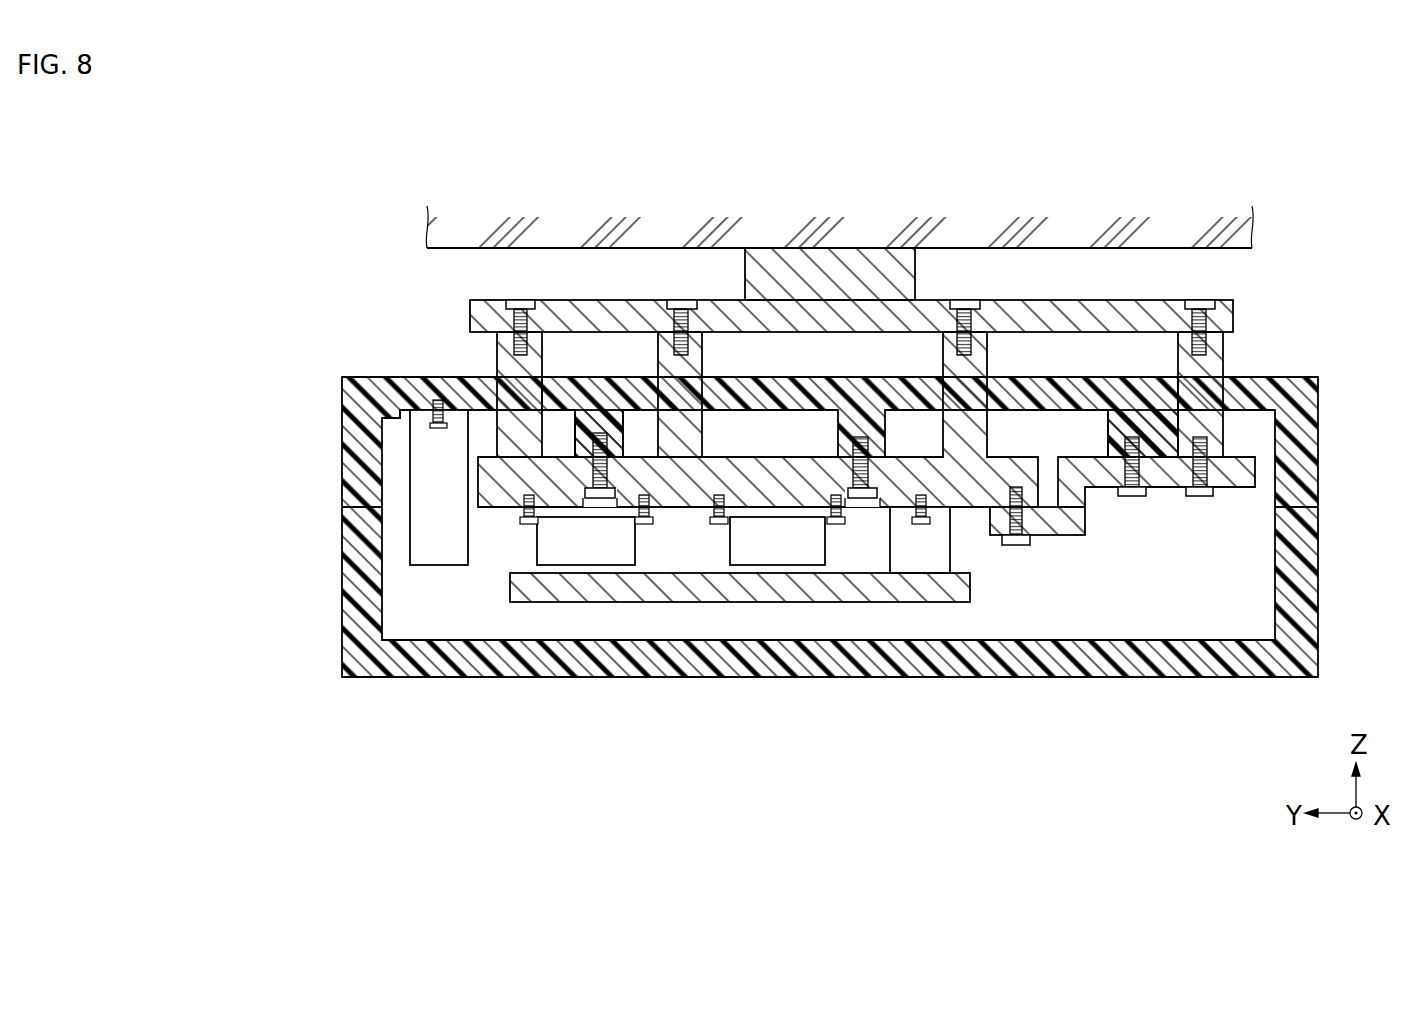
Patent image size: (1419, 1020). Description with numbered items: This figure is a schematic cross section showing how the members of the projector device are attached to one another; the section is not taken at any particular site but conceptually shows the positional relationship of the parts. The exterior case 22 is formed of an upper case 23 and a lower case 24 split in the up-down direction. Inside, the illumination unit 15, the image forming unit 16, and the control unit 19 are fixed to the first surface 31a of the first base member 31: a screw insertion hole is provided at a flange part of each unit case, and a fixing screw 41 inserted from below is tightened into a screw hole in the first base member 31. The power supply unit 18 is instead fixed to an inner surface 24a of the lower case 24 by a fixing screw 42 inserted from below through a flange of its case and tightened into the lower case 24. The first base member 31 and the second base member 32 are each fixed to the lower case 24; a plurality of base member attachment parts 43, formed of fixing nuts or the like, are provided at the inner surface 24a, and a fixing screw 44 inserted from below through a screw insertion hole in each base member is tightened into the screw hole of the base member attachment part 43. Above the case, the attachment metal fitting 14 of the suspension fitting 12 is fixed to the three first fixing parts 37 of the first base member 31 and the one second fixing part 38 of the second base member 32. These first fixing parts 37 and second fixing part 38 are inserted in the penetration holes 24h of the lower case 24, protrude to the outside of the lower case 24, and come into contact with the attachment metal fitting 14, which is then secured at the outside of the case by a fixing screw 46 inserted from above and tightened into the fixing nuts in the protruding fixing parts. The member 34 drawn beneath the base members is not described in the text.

The suspension fitting 12 is at (838, 280).
The attachment metal fitting 14 is at (1233, 318).
The illumination unit 15 is at (583, 555).
The image forming unit 16 is at (790, 555).
The power supply unit 18 is at (435, 556).
The control unit 19 is at (687, 590).
The exterior case 22 is at (752, 527).
The upper case 23 is at (350, 548).
The lower case 24 is at (352, 490).
The inner surface 24a is at (395, 418).
The penetration holes 24h is at (540, 392).
The first base member 31 is at (970, 500).
The first surface 31a is at (505, 510).
The second base member 32 is at (1238, 488).
The fixing block 34 is at (1010, 545).
The first fixing parts 37 is at (500, 346).
The second fixing part 38 is at (1213, 353).
The fixing screw 41 is at (530, 525).
The fixing screw 42 is at (437, 425).
The base member attachment parts 43 is at (577, 438).
The fixing screw 44 is at (602, 500).
The fixing screw 46 is at (520, 300).